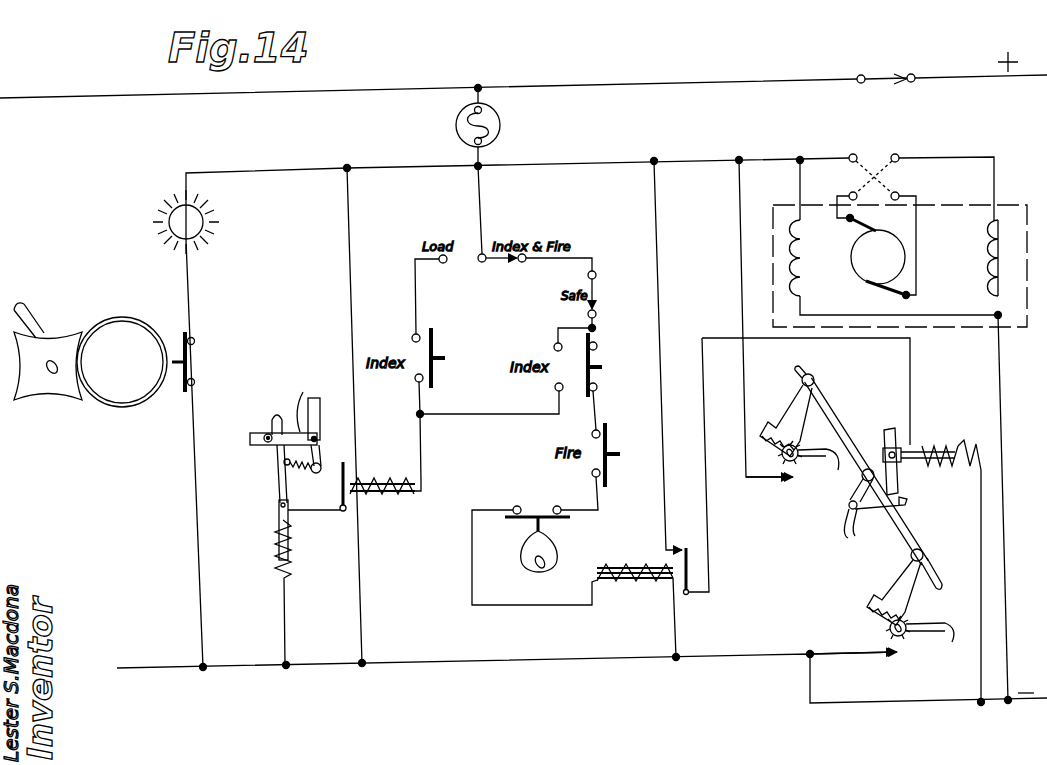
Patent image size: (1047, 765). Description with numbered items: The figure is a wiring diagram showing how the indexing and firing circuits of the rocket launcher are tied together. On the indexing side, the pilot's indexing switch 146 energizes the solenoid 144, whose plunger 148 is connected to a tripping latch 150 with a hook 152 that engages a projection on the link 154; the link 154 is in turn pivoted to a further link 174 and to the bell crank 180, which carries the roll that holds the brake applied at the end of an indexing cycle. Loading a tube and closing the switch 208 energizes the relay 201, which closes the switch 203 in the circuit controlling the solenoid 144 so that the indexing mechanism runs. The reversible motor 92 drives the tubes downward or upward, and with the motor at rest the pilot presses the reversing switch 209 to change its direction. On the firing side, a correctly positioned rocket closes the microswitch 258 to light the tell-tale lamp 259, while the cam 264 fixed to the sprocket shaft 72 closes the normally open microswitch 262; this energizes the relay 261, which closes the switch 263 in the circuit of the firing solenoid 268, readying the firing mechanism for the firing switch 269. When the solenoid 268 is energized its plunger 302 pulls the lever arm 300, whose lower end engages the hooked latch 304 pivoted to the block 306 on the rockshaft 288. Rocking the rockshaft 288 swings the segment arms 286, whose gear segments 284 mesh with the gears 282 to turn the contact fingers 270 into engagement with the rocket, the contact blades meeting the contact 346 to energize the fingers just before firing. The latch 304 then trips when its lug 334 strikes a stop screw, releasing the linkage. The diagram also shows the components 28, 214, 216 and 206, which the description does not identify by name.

The tell-tale lamp 259 is at (212, 222).
The disc 28 is at (112, 410).
The cam 214 is at (20, 397).
The cam lobe 216 is at (22, 316).
The microswitch 258 is at (192, 362).
The link 154 is at (258, 433).
The hook 152 is at (277, 416).
The link 174 is at (304, 392).
The bell crank 180 is at (320, 414).
The tripping latch 150 is at (277, 476).
The spring link 206 is at (302, 470).
The solenoid 144 is at (279, 515).
The solenoid plunger 148 is at (278, 546).
The switch 203 is at (352, 470).
The relay 201 is at (370, 494).
The switch 208 is at (436, 345).
The indexing switch 146 is at (600, 359).
The firing switch 269 is at (609, 442).
The microswitch 262 is at (532, 512).
The cam 264 is at (546, 549).
The sprocket shaft 72 is at (522, 545).
The relay 261 is at (620, 580).
The switch 263 is at (688, 568).
The motor 92 is at (974, 196).
The reversing switch 209 is at (874, 156).
The rockshaft 288 is at (826, 399).
The segment arms 286 is at (798, 394).
The gear segments 284 is at (783, 452).
The gears 282 is at (781, 470).
The contact fingers 270 is at (828, 448).
The contact 346 is at (794, 482).
The block 306 is at (861, 482).
The lug 334 is at (851, 530).
The latch 304 is at (908, 503).
The arm 300 is at (898, 478).
The solenoid 268 is at (928, 448).
The plunger 302 is at (960, 453).